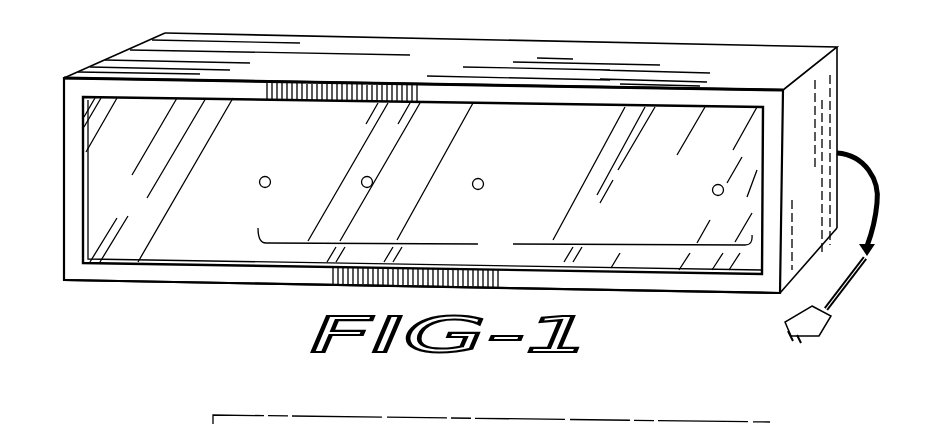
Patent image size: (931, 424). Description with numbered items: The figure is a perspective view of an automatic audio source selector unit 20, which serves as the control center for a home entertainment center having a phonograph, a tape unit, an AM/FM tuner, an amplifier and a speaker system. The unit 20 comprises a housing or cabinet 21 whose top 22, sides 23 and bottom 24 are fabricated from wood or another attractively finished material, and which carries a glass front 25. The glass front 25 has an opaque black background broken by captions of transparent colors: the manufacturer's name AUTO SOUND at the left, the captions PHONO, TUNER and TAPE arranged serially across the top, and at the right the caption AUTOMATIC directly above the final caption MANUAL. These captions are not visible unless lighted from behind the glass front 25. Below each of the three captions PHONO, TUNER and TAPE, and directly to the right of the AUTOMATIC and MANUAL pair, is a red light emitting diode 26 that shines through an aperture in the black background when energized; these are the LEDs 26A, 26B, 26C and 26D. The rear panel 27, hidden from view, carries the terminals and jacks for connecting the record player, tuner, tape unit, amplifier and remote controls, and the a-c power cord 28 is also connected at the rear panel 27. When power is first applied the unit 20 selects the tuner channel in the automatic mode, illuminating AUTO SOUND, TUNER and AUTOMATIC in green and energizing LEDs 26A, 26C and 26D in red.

The automatic audio source selector unit 20 is at (101, 50).
The housing or cabinet 21 is at (812, 68).
The top 22 is at (485, 57).
The sides 23 is at (63, 137).
The bottom 24 is at (783, 277).
The glass front 25 is at (634, 256).
The light emitting diode 26 is at (505, 217).
The light emitting diode associated with PHONO caption 26A is at (271, 183).
The light emitting diode associated with TUNER caption 26B is at (387, 196).
The light emitting diode associated with TAPE caption 26C is at (484, 186).
The light emitting diode associated with AUTOMATIC/MANUAL captions 26D is at (723, 191).
The rear panel 27 is at (653, 43).
The a-c power cord 28 is at (832, 299).